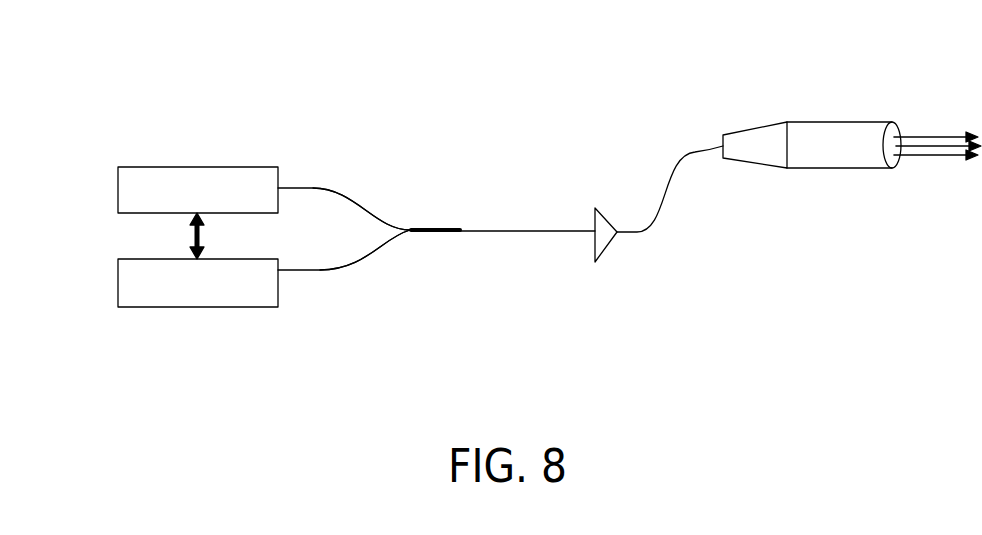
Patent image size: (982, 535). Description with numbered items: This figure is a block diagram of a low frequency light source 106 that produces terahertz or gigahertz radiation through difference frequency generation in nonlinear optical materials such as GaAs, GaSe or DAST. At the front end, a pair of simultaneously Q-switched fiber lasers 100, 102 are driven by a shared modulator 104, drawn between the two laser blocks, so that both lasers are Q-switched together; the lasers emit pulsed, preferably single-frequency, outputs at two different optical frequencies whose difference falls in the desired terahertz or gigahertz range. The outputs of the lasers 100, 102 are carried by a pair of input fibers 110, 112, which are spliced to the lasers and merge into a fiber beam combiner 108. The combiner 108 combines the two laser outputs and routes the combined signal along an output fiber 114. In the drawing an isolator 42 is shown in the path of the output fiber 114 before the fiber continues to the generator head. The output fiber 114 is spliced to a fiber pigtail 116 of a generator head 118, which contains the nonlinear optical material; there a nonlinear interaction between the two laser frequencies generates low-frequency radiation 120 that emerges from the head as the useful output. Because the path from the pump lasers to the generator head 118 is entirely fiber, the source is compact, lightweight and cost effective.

The Q-switched fiber laser 100 is at (152, 167).
The Q-switched fiber laser 102 is at (188, 307).
The shared modulator 104 is at (185, 237).
The low frequency light source 106 is at (300, 135).
The fiber beam combiner 108 is at (428, 242).
The input fiber 110 is at (360, 212).
The input fiber 112 is at (390, 240).
The output fiber 114 is at (523, 233).
The optical isolator 42 is at (602, 243).
The fiber pigtail 116 is at (695, 152).
The generator head 118 is at (843, 122).
The low-frequency radiation 120 is at (930, 157).